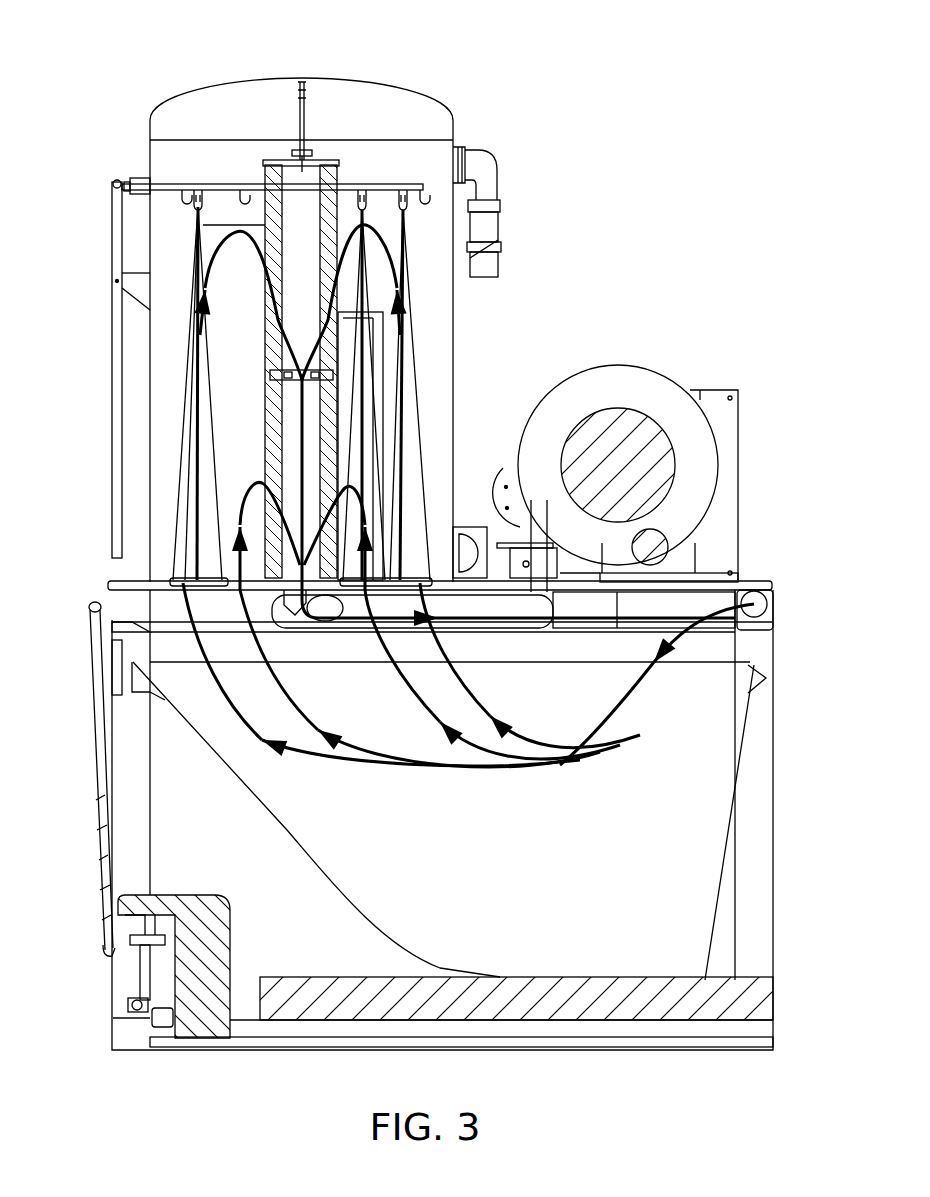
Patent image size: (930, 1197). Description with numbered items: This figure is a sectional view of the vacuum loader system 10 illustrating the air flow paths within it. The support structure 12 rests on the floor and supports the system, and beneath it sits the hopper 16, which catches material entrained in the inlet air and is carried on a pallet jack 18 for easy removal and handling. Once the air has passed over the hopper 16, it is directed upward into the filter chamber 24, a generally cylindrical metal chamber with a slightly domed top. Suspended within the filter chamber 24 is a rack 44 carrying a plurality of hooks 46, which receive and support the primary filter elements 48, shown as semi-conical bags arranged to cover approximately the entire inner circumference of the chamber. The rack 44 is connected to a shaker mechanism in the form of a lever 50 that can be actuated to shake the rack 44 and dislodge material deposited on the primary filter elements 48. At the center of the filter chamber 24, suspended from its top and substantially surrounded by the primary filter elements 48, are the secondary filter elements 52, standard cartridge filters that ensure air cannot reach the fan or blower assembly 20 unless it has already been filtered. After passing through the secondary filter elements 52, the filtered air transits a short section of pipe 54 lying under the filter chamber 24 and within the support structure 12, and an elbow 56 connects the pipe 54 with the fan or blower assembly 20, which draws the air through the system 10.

The vacuum loader system 10 is at (104, 80).
The support structure 12 is at (777, 822).
The hopper 16 is at (717, 744).
The pallet jack 18 is at (202, 995).
The fan or blower assembly 20 is at (617, 377).
The filter chamber 24 is at (277, 78).
The rack 44 is at (211, 183).
The hooks 46 is at (185, 190).
The primary filter elements 48 is at (193, 328).
The lever 50 is at (117, 407).
The secondary filter elements 52 is at (327, 135).
The pipe 54 is at (497, 605).
The elbow 56 is at (517, 537).